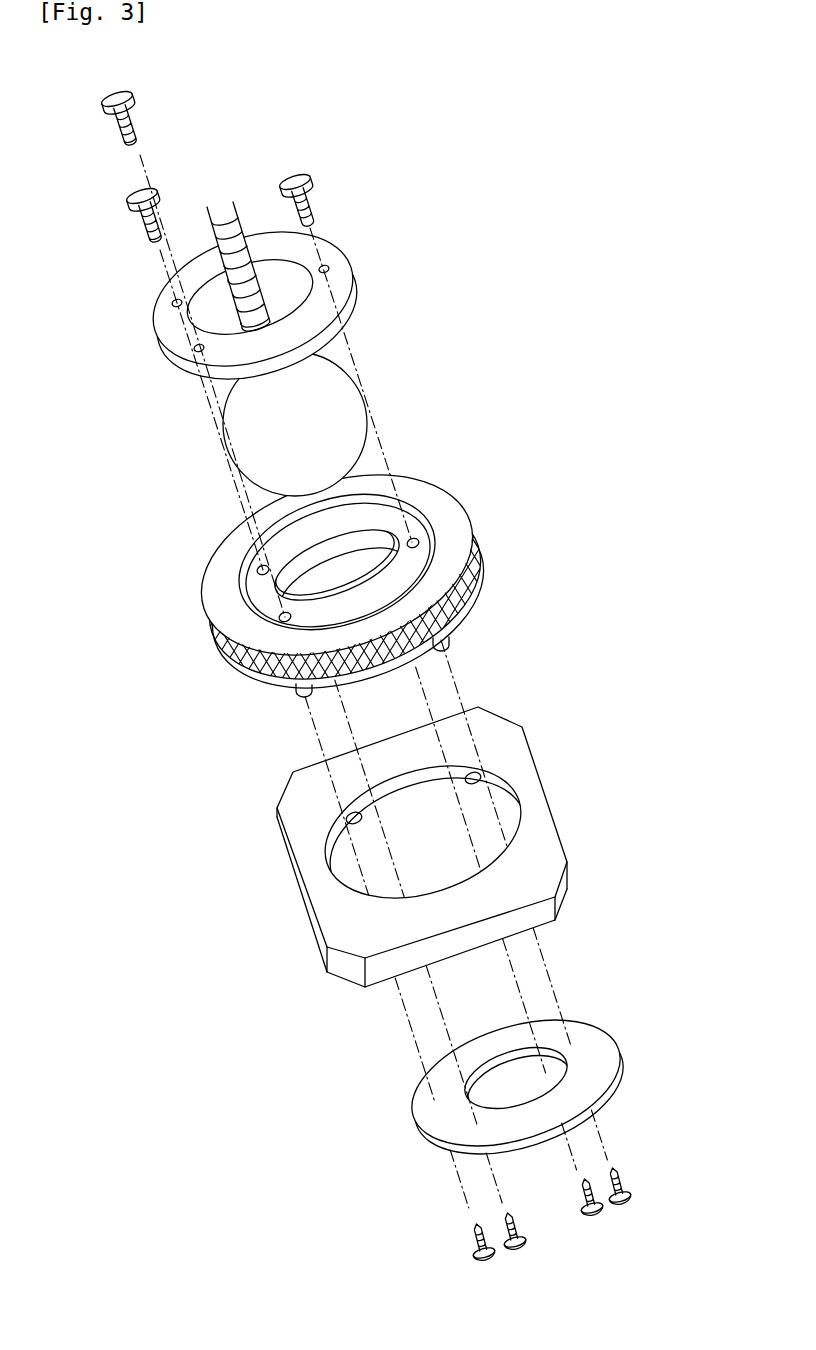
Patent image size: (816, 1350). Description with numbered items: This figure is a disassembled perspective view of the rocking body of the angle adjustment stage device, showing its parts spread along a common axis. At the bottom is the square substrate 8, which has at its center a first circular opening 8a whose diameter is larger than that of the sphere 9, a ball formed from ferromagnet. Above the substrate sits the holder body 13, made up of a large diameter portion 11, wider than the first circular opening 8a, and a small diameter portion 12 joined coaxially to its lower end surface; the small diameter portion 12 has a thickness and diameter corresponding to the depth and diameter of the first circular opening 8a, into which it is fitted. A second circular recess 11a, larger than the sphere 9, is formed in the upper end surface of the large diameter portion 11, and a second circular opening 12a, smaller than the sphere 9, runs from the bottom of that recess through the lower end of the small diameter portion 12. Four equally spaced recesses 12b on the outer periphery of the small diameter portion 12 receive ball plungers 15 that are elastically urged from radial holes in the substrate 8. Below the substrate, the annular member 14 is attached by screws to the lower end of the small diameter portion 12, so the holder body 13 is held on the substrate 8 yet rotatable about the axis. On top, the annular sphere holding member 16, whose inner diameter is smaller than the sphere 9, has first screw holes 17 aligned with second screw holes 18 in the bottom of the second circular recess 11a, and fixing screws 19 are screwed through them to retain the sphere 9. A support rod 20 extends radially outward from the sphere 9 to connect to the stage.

The square substrate 8 is at (537, 755).
The first circular opening 8a is at (520, 809).
The sphere 9 is at (342, 366).
The large diameter portion 11 is at (476, 547).
The second circular recess 11a is at (381, 494).
The small diameter portion 12 is at (475, 606).
The second circular opening 12a is at (307, 571).
The recesses 12b is at (450, 644).
The holder body 13 is at (421, 478).
The annular member 14 is at (602, 1046).
The ball plunger 15 is at (478, 774).
The annular sphere holding member 16 is at (354, 286).
The first screw holes 17 is at (330, 268).
The second screw holes 18 is at (419, 539).
The fixing screws 19 is at (133, 111).
The support rod 20 is at (242, 215).